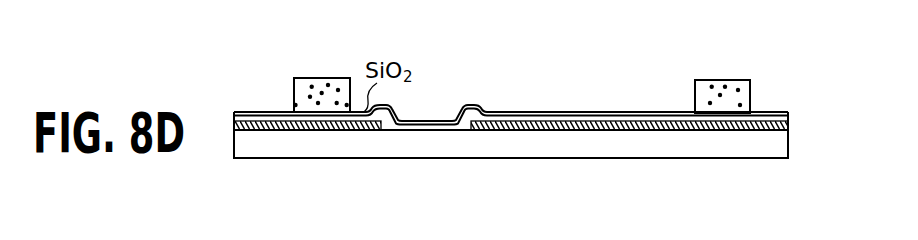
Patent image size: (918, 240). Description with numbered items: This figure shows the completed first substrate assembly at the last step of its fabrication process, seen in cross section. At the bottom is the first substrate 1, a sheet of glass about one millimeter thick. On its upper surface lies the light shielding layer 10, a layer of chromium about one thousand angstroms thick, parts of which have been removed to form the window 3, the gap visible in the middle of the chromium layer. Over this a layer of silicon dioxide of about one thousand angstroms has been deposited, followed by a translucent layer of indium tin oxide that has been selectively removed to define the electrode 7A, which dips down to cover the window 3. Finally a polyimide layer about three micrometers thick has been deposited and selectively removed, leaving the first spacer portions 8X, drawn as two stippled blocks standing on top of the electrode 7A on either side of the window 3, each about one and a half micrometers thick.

The first substrate 1 is at (788, 145).
The light shielding layer 10 is at (770, 124).
The electrode 7A is at (475, 107).
The window 3 is at (427, 105).
The first spacer portions 8X is at (320, 77).